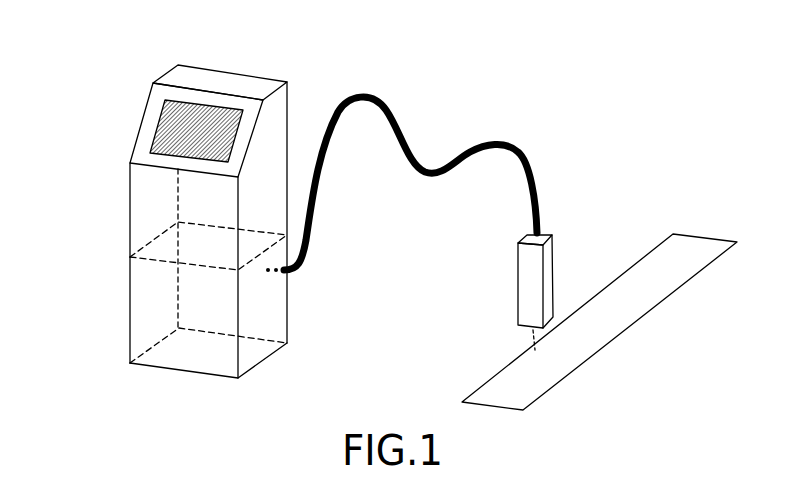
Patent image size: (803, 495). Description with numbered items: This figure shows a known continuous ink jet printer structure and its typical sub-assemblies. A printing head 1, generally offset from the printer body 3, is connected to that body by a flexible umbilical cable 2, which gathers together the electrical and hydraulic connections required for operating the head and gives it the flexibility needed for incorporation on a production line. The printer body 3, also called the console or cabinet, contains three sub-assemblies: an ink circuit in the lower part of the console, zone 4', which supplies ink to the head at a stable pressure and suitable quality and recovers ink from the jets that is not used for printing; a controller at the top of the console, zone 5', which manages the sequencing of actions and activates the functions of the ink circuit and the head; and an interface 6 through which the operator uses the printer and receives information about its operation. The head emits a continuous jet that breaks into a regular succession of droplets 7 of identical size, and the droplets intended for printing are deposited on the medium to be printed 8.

The printing head 1 is at (530, 260).
The flexible umbilical cable 2 is at (449, 158).
The printer body 3 is at (262, 53).
The lower part of the console (ink circuit zone) 4' is at (238, 345).
The top of the console (controller zone) 5' is at (176, 230).
The interface 6 is at (163, 128).
The droplets 7 is at (536, 357).
The medium to be printed 8 is at (683, 245).